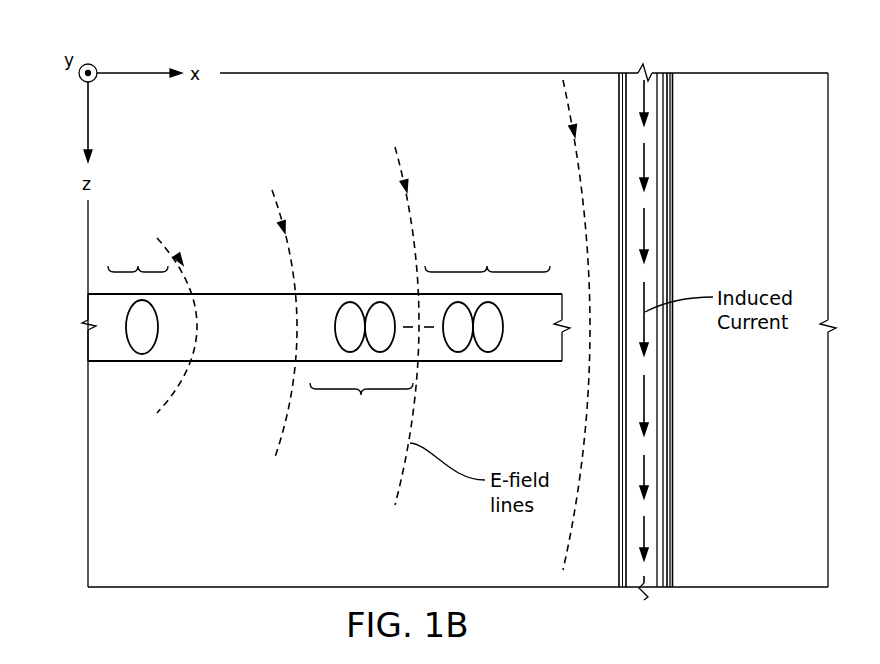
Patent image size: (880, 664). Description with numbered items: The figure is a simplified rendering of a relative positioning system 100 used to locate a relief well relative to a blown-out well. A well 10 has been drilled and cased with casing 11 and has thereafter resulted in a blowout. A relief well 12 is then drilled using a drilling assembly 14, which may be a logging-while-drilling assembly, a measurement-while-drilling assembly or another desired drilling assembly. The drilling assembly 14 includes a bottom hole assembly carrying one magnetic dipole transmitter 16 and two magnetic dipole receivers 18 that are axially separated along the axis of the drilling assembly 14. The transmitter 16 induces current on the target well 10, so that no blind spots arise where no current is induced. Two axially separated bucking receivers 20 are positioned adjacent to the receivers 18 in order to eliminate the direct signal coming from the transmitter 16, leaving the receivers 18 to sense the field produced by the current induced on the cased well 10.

The well 10 is at (668, 58).
The casing 11 is at (618, 90).
The relief well 12 is at (148, 362).
The drilling assembly 14 is at (79, 288).
The magnetic dipole transmitter 16 is at (138, 265).
The magnetic dipole receivers 18 is at (487, 264).
The bucking receivers 20 is at (361, 395).
The relative positioning system 100 is at (300, 130).